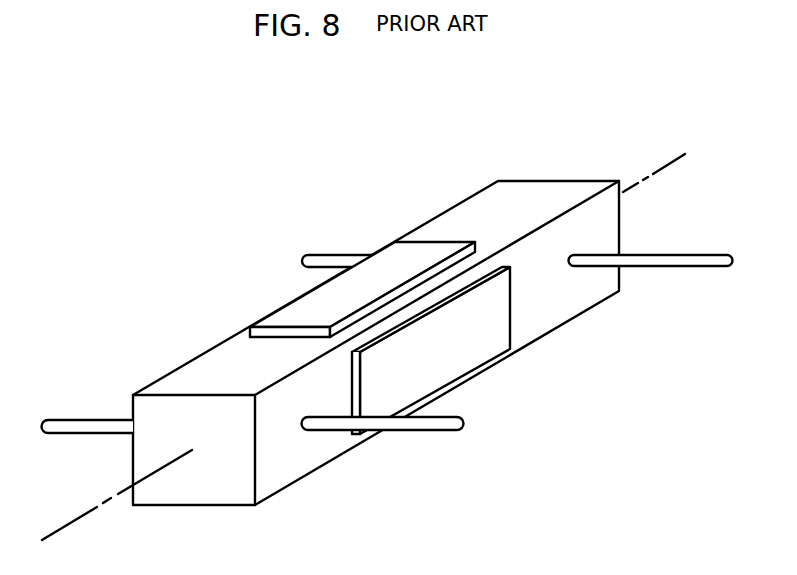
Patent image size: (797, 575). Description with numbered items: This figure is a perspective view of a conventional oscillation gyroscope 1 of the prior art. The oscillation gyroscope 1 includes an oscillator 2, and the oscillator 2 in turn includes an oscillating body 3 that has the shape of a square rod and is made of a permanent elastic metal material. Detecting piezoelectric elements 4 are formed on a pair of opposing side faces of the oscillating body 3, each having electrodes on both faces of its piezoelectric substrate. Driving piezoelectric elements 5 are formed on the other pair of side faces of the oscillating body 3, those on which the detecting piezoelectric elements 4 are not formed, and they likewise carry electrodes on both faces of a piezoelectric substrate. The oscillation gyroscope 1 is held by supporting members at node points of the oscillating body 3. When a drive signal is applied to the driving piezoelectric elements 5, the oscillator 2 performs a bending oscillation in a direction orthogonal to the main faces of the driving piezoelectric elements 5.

The oscillation gyroscope 1 is at (203, 166).
The oscillator 2 is at (468, 183).
The oscillating body 3 is at (562, 195).
The detecting piezoelectric element 4 is at (220, 344).
The driving piezoelectric element 5 is at (295, 305).